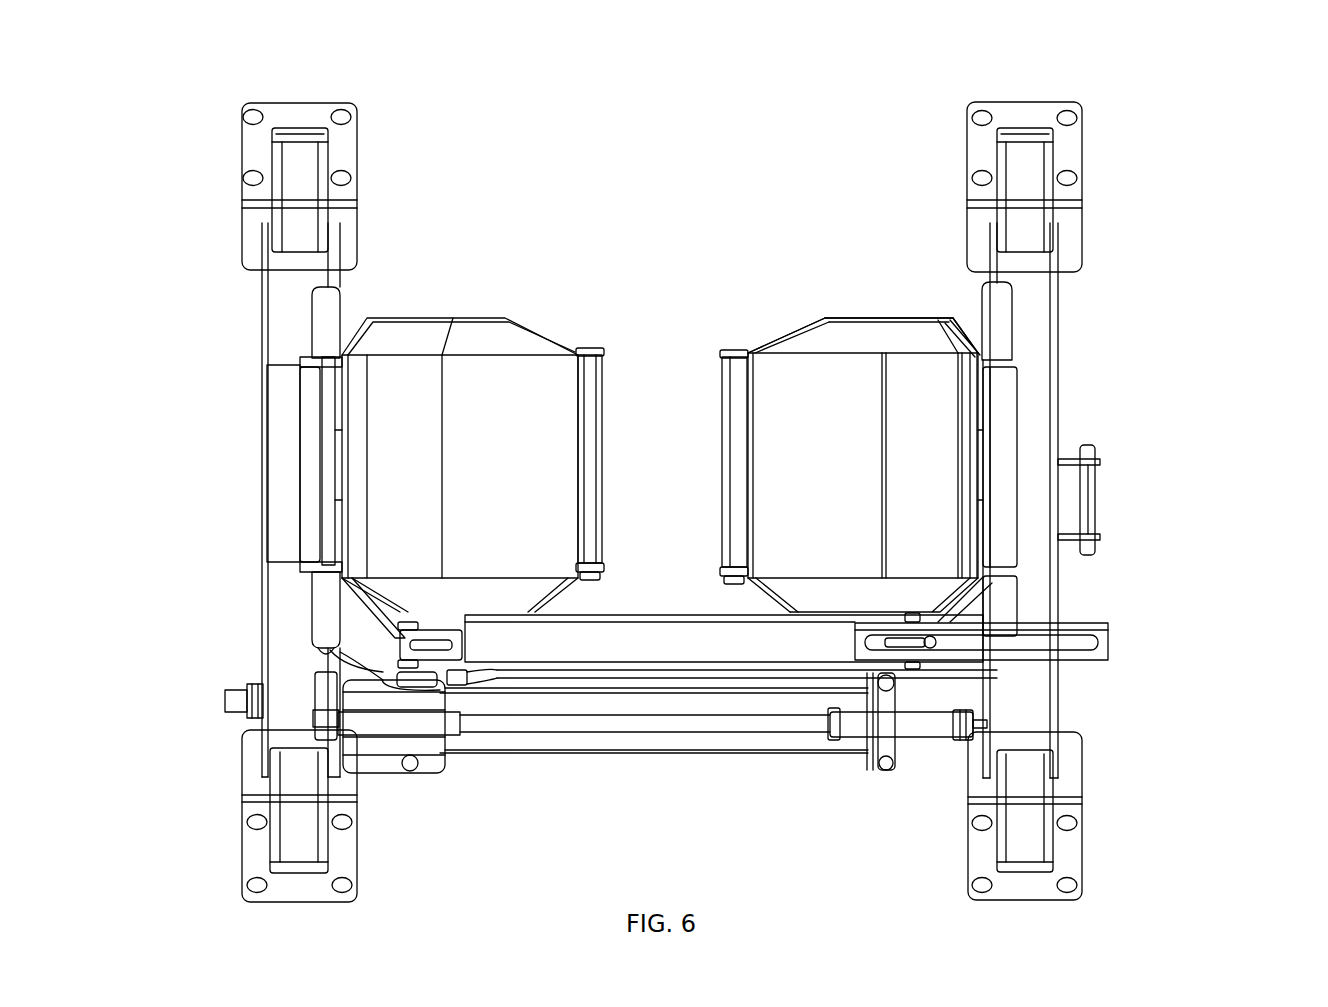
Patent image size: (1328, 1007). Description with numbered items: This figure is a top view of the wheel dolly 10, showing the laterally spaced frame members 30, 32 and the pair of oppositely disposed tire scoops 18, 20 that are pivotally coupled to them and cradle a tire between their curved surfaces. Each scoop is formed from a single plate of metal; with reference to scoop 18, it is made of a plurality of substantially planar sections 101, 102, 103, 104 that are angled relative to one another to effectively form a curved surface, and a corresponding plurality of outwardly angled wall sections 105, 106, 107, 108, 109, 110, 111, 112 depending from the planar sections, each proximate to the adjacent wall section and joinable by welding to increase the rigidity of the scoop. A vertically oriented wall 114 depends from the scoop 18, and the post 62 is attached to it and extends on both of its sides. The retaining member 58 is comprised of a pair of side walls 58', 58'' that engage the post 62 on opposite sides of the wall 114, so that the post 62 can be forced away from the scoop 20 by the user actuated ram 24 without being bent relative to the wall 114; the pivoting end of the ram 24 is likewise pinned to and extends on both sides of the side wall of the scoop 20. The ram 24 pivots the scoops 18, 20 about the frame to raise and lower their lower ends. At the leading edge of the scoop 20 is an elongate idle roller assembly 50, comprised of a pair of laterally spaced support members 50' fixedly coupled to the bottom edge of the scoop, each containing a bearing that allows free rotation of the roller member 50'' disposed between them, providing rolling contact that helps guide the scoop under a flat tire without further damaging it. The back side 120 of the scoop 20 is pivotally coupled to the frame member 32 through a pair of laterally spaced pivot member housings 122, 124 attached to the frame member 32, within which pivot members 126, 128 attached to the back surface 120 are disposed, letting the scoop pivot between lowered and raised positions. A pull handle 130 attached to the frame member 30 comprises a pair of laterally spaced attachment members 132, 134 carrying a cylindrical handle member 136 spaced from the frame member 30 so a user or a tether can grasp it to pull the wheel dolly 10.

The wheel dolly 10 is at (1114, 159).
The tire support structure or scoop 18 is at (838, 317).
The tire support structure or scoop 20 is at (430, 316).
The user actuated ram 24 is at (653, 650).
The frame member 30 is at (1060, 375).
The frame member 32 is at (277, 450).
The idle roller assembly 50 is at (617, 447).
The support member 50' is at (619, 418).
The roller member 50'' is at (632, 459).
The retaining member 58 is at (1058, 651).
The side wall 58' is at (1066, 625).
The side wall 58'' is at (1029, 667).
The post 62 is at (898, 668).
The planar section 101 is at (778, 365).
The planar section 102 is at (930, 370).
The planar section 103 is at (1010, 415).
The planar section 104 is at (975, 485).
The wall section 105 is at (790, 332).
The wall section 106 is at (893, 330).
The wall section 107 is at (985, 322).
The wall section 108 is at (960, 385).
The wall section 109 is at (887, 592).
The wall section 110 is at (1010, 572).
The wall section 111 is at (884, 568).
The wall section 112 is at (785, 595).
The vertically oriented wall 114 is at (925, 648).
The back side of the scoop 120 is at (338, 517).
The pivot member housing 122 is at (328, 320).
The pivot member housing 124 is at (328, 605).
The pivot member 126 is at (333, 380).
The pivot member 128 is at (335, 545).
The pull handle 130 is at (1087, 450).
The attachment member 132 is at (1100, 463).
The attachment member 134 is at (1097, 540).
The handle member 136 is at (1093, 507).